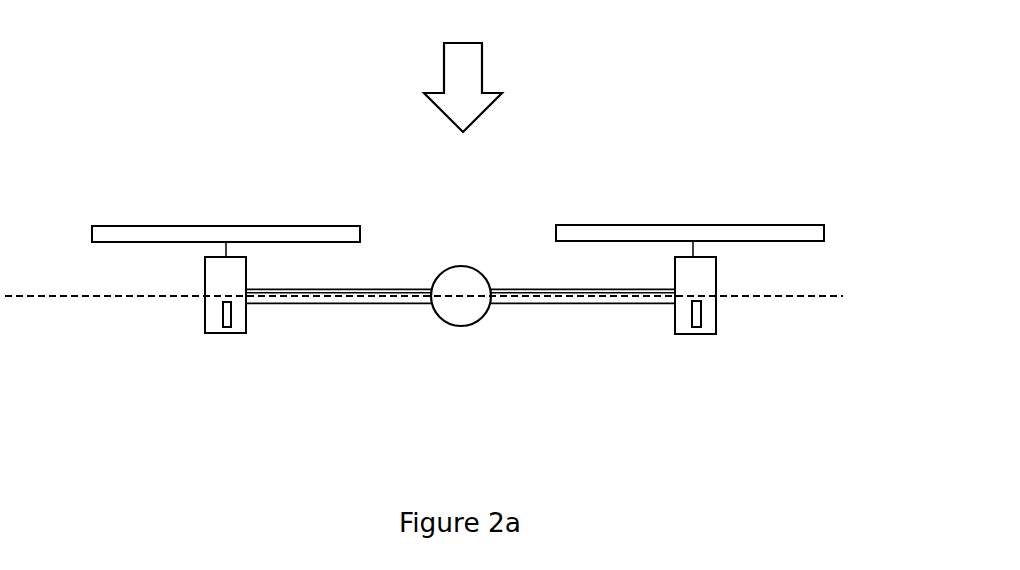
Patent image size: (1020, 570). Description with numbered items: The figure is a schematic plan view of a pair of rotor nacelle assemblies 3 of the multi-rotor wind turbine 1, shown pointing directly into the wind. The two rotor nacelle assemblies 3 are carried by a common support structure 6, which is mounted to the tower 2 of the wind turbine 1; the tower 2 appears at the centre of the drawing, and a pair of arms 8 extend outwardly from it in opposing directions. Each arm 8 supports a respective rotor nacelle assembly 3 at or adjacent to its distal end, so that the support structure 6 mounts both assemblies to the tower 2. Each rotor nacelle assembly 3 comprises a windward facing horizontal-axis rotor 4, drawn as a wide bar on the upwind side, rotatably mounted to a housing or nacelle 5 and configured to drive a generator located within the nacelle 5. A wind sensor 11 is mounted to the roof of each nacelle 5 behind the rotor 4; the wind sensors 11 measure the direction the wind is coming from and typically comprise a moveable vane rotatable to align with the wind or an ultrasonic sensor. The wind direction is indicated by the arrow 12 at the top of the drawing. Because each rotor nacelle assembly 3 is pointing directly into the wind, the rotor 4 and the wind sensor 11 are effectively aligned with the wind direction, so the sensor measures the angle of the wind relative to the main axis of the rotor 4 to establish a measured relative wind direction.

The wind turbine 1 is at (634, 99).
The tower 2 is at (480, 318).
The rotor nacelle assembly 3 is at (251, 358).
The rotor 4 is at (221, 225).
The nacelle 5 is at (205, 265).
The support structure 6 is at (640, 325).
The arm 8 is at (341, 304).
The wind sensor 11 is at (227, 312).
The arrow 12 is at (463, 87).